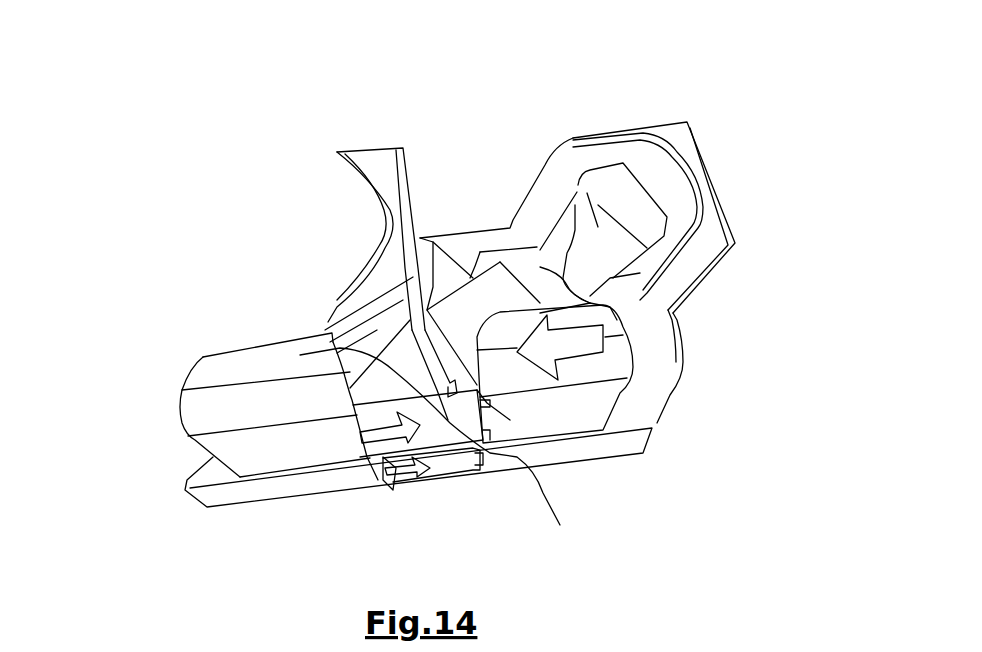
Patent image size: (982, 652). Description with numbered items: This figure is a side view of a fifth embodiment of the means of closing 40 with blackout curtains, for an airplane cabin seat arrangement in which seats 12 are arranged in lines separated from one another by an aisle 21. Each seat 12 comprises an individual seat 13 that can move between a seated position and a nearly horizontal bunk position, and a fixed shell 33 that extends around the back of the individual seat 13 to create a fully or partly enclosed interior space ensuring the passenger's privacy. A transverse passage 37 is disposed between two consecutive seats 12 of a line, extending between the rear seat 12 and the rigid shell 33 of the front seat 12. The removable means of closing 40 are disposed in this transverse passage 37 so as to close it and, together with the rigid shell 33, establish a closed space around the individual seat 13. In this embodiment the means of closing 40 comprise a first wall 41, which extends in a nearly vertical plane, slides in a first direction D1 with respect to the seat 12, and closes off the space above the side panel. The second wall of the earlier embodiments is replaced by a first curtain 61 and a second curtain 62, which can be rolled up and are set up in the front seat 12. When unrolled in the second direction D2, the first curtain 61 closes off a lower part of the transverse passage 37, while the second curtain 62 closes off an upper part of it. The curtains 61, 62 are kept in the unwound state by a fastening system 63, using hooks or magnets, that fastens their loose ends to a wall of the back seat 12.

The seat 12 is at (358, 130).
The individual seat 13 is at (575, 190).
The aisle 21 is at (633, 483).
The fixed shell 33 is at (410, 210).
The transverse passage 37 is at (447, 488).
The means of closing 40 is at (423, 382).
The first wall 41 is at (225, 400).
The first curtain 61 is at (453, 460).
The second curtain 62 is at (300, 355).
The fastening system 63 is at (487, 403).
The first direction D1 is at (567, 348).
The second direction D2 is at (392, 445).